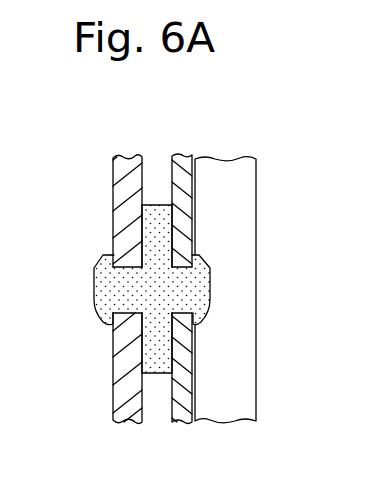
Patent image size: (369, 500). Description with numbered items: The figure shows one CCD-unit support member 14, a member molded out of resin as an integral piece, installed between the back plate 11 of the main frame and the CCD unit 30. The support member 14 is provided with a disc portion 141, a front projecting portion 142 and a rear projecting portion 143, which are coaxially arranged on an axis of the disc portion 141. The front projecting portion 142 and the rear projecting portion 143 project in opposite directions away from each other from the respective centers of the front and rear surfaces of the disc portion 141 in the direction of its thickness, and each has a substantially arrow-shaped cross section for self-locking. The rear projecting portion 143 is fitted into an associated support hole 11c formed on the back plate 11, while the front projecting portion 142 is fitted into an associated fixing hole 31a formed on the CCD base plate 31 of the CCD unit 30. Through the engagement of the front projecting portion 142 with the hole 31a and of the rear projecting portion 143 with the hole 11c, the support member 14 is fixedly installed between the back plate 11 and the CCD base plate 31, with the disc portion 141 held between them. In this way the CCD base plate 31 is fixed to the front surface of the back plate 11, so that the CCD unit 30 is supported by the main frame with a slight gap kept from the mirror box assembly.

The CCD-unit support member 14 is at (157, 199).
The disc portion 141 is at (160, 374).
The front projecting portion 142 is at (202, 288).
The rear projecting portion 143 is at (102, 283).
The back plate 11 is at (118, 366).
The support hole 11c is at (119, 313).
The CCD unit 30 is at (253, 148).
The CCD base plate 31 is at (183, 406).
The fixing hole 31a is at (191, 309).